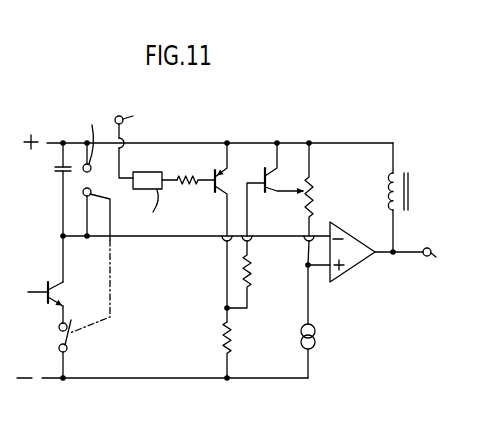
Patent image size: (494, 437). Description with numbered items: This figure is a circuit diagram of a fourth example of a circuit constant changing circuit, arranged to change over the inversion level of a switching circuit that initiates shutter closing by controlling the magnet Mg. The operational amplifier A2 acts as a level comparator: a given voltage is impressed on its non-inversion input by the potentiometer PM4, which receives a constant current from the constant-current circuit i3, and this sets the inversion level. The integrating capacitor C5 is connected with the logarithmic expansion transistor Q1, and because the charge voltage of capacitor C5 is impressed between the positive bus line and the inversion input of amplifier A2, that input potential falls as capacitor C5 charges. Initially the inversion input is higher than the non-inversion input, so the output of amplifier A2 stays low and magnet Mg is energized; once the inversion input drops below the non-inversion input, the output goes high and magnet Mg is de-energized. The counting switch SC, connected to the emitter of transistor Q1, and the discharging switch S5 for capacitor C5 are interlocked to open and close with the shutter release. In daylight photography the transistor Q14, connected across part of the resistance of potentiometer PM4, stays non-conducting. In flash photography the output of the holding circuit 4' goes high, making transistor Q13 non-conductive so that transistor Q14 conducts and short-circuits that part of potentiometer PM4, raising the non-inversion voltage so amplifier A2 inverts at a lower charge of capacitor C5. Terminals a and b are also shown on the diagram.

The integrating capacitor C5 is at (57, 168).
The discharging switch S5 is at (89, 218).
The terminal a is at (131, 140).
The holding circuit 4' is at (166, 190).
The transistor Q13 is at (210, 193).
The transistor Q14 is at (268, 194).
The potentiometer PM4 is at (312, 200).
The operational amplifier A2 is at (361, 264).
The constant-current circuit i3 is at (315, 332).
The magnet Mg is at (414, 197).
The terminal b is at (413, 254).
The logarithmic expansion transistor Q1 is at (60, 278).
The counting switch SC is at (70, 340).